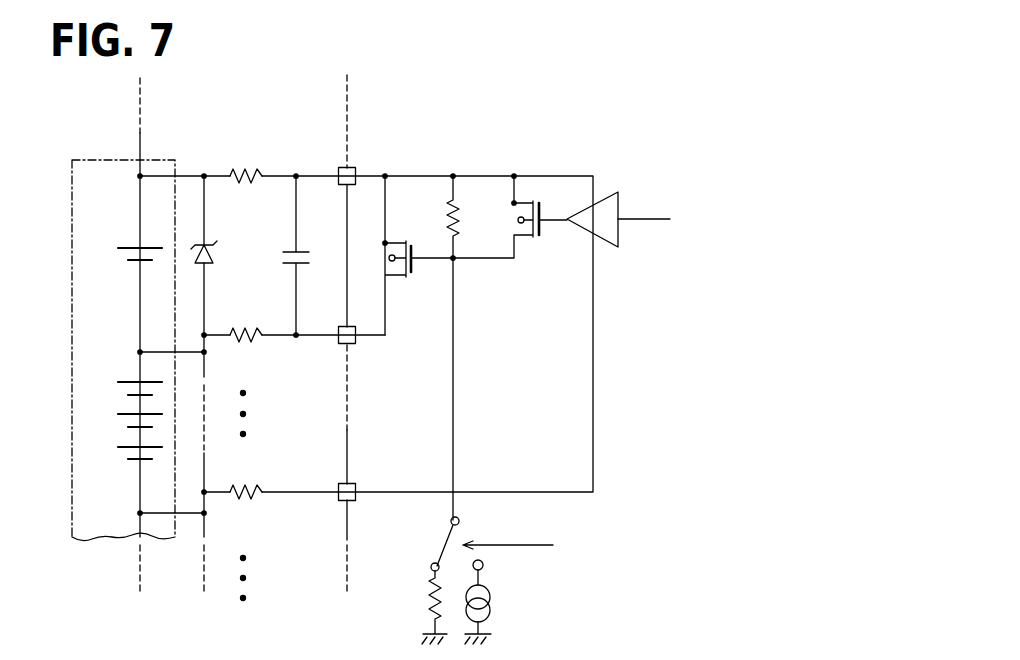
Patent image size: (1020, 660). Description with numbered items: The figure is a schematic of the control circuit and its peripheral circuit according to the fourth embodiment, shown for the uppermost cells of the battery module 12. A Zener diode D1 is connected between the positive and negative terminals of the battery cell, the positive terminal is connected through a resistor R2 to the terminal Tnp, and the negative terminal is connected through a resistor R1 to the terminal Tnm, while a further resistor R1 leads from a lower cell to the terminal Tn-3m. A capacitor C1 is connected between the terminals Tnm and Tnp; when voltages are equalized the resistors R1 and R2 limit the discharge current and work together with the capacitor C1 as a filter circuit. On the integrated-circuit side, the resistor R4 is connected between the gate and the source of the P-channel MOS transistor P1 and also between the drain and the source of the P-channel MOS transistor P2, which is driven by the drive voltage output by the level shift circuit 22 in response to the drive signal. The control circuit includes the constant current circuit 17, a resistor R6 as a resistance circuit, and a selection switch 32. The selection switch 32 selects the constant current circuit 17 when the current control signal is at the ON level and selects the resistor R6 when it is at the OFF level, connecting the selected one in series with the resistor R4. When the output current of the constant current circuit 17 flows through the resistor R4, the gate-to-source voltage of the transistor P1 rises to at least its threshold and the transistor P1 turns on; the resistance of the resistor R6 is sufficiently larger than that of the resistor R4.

The battery module 12 is at (86, 158).
The level shift circuit 22 is at (605, 197).
The selection switch 32 is at (437, 550).
The constant current circuit 17 is at (497, 601).
The resistor R1 is at (245, 345).
The resistor R2 is at (246, 169).
The resistor R4 is at (462, 207).
The resistor R6 is at (429, 604).
The capacitor C1 is at (306, 250).
The Zener diode D1 is at (210, 239).
The P-channel MOS transistor P1 is at (394, 240).
The P-channel MOS transistor P2 is at (512, 228).
The terminal Tnp is at (340, 168).
The terminal Tnm is at (343, 344).
The terminal Tn-3m is at (342, 502).